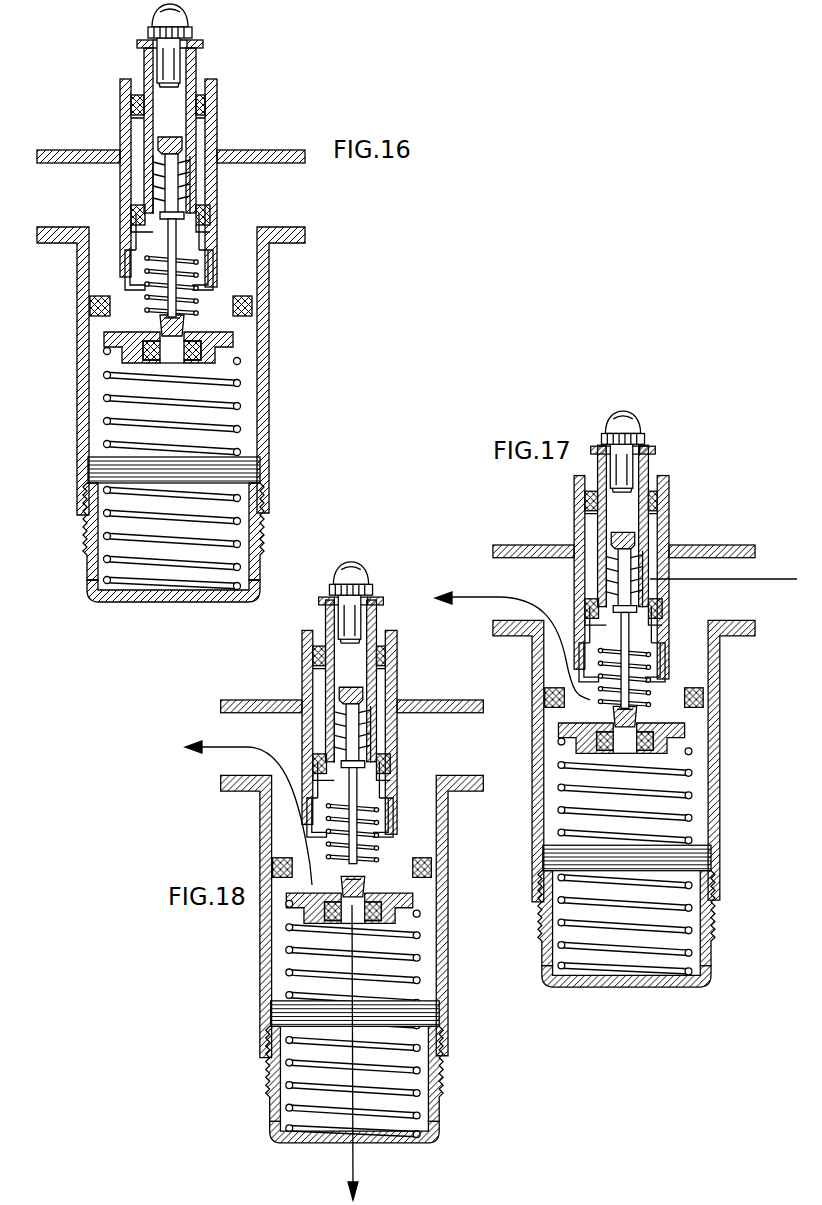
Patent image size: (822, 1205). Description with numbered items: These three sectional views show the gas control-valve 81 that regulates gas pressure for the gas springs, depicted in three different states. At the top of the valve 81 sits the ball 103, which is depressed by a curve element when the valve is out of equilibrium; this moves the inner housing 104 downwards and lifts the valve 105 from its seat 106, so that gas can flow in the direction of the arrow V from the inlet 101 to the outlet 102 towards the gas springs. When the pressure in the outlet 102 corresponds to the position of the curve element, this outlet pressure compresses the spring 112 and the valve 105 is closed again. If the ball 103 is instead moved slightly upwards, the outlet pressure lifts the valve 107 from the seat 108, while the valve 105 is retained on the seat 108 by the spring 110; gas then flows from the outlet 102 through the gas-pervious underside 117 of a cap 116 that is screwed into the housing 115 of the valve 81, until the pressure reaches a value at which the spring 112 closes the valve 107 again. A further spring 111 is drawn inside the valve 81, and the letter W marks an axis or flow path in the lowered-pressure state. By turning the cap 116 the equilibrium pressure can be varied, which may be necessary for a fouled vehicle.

In FIG. 16, the gas control-valve 81 is at (220, 130).
In FIG. 17, the gas control-valve 81 is at (670, 501).
In FIG. 18, the gas control-valve 81 is at (349, 732).
In FIG. 16, the inlet 101 is at (293, 185).
In FIG. 17, the inlet 101 is at (738, 570).
In FIG. 18, the inlet 101 is at (448, 723).
In FIG. 16, the outlet 102 is at (57, 193).
In FIG. 17, the outlet 102 is at (512, 577).
In FIG. 18, the outlet 102 is at (250, 732).
In FIG. 16, the ball 103 is at (172, 8).
In FIG. 17, the ball 103 is at (630, 416).
In FIG. 18, the ball 103 is at (352, 565).
In FIG. 16, the inner housing 104 is at (197, 176).
In FIG. 17, the inner housing 104 is at (644, 560).
In FIG. 18, the inner housing 104 is at (368, 646).
In FIG. 16, the valve 105 is at (193, 190).
In FIG. 17, the valve 105 is at (613, 600).
In FIG. 18, the valve 105 is at (370, 760).
In FIG. 16, the seat 106 is at (199, 236).
In FIG. 17, the seat 106 is at (660, 640).
In FIG. 18, the seat 106 is at (385, 790).
In FIG. 16, the valve 107 is at (184, 326).
In FIG. 17, the valve 107 is at (640, 705).
In FIG. 18, the valve 107 is at (385, 885).
In FIG. 16, the seat 108 is at (230, 342).
In FIG. 17, the seat 108 is at (680, 712).
In FIG. 18, the seat 108 is at (410, 897).
In FIG. 16, the spring 110 is at (190, 158).
In FIG. 17, the spring 110 is at (644, 573).
In FIG. 18, the spring 110 is at (368, 722).
In FIG. 16, the return spring 111 is at (197, 303).
In FIG. 17, the return spring 111 is at (665, 690).
In FIG. 18, the return spring 111 is at (380, 857).
In FIG. 16, the spring 112 is at (236, 432).
In FIG. 17, the spring 112 is at (690, 810).
In FIG. 18, the spring 112 is at (420, 937).
In FIG. 16, the housing 115 is at (270, 478).
In FIG. 17, the housing 115 is at (717, 795).
In FIG. 18, the housing 115 is at (447, 995).
In FIG. 16, the cap 116 is at (264, 563).
In FIG. 17, the cap 116 is at (718, 957).
In FIG. 18, the cap 116 is at (447, 1103).
In FIG. 16, the gas-pervious underside 117 is at (183, 603).
In FIG. 17, the gas-pervious underside 117 is at (690, 988).
In FIG. 18, the gas-pervious underside 117 is at (427, 1140).
In FIG. 17, the arrow V is at (783, 578).
In FIG. 18, the axis / flow path W is at (360, 982).